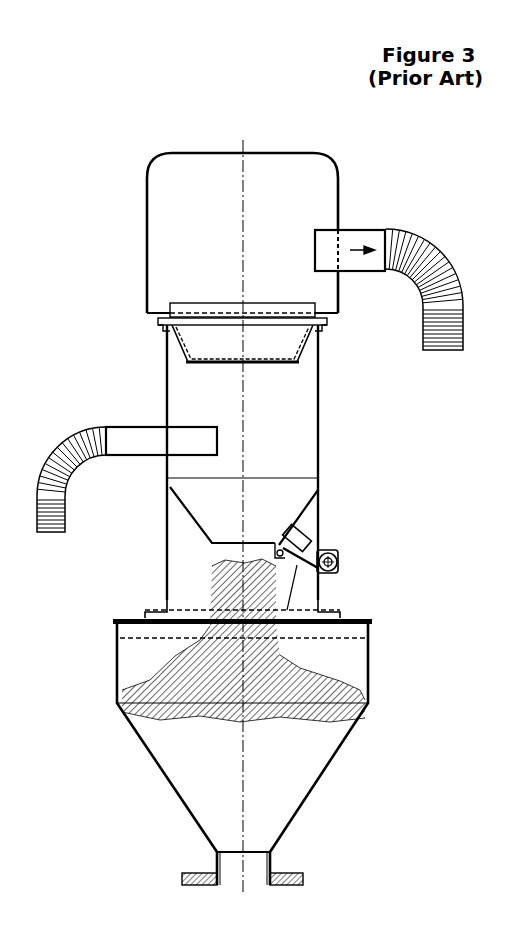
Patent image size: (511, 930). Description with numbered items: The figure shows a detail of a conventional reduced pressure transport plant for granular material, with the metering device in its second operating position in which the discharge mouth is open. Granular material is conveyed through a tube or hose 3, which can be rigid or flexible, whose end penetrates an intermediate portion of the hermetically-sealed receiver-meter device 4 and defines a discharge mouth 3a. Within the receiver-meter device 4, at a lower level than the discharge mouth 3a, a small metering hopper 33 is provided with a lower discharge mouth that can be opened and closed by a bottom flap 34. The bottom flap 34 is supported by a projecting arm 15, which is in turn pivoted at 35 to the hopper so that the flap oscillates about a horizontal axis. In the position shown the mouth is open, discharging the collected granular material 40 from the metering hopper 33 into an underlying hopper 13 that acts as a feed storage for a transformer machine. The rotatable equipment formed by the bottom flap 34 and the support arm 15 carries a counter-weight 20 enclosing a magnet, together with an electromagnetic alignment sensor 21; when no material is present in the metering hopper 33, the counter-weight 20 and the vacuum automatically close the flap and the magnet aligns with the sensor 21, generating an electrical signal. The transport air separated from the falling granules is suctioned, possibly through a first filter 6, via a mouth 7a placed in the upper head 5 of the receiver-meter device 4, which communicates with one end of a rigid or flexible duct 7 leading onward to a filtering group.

The upper head 5 is at (325, 160).
The mouth 7a is at (368, 230).
The duct 7 is at (455, 258).
The first filter 6 is at (303, 350).
The receiver-meter device 4 is at (318, 405).
The discharge mouth 3a is at (192, 427).
The tube or hose 3 is at (92, 427).
The metering hopper 33 is at (178, 503).
The pivot 35 is at (279, 548).
The projecting arm 15 is at (320, 578).
The counter-weight 20 is at (303, 532).
The electromagnetic alignment sensor 21 is at (338, 560).
The granular material 40 is at (340, 688).
The bottom flap 34 is at (283, 628).
The underlying hopper 13 is at (325, 770).